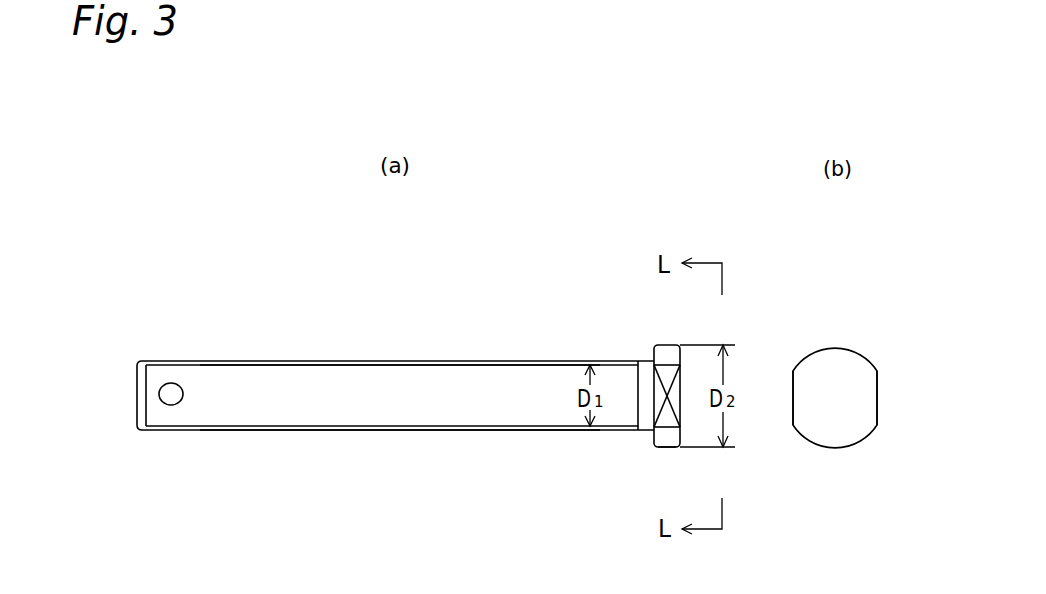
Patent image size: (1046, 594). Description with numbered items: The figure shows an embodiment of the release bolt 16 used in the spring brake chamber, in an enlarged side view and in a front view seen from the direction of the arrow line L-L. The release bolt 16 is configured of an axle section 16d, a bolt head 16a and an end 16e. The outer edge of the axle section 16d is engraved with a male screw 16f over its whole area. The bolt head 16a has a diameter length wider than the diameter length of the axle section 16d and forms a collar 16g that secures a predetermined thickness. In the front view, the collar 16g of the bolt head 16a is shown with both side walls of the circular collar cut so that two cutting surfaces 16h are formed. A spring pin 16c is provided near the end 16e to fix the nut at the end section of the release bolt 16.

The release bolt 16 is at (403, 273).
The bolt head 16a is at (666, 343).
The spring pin 16c is at (172, 399).
The axle section 16d is at (292, 404).
The end 16e is at (148, 397).
The male screw 16f is at (368, 430).
The collar 16g is at (663, 447).
The cutting surfaces 16h is at (662, 400).